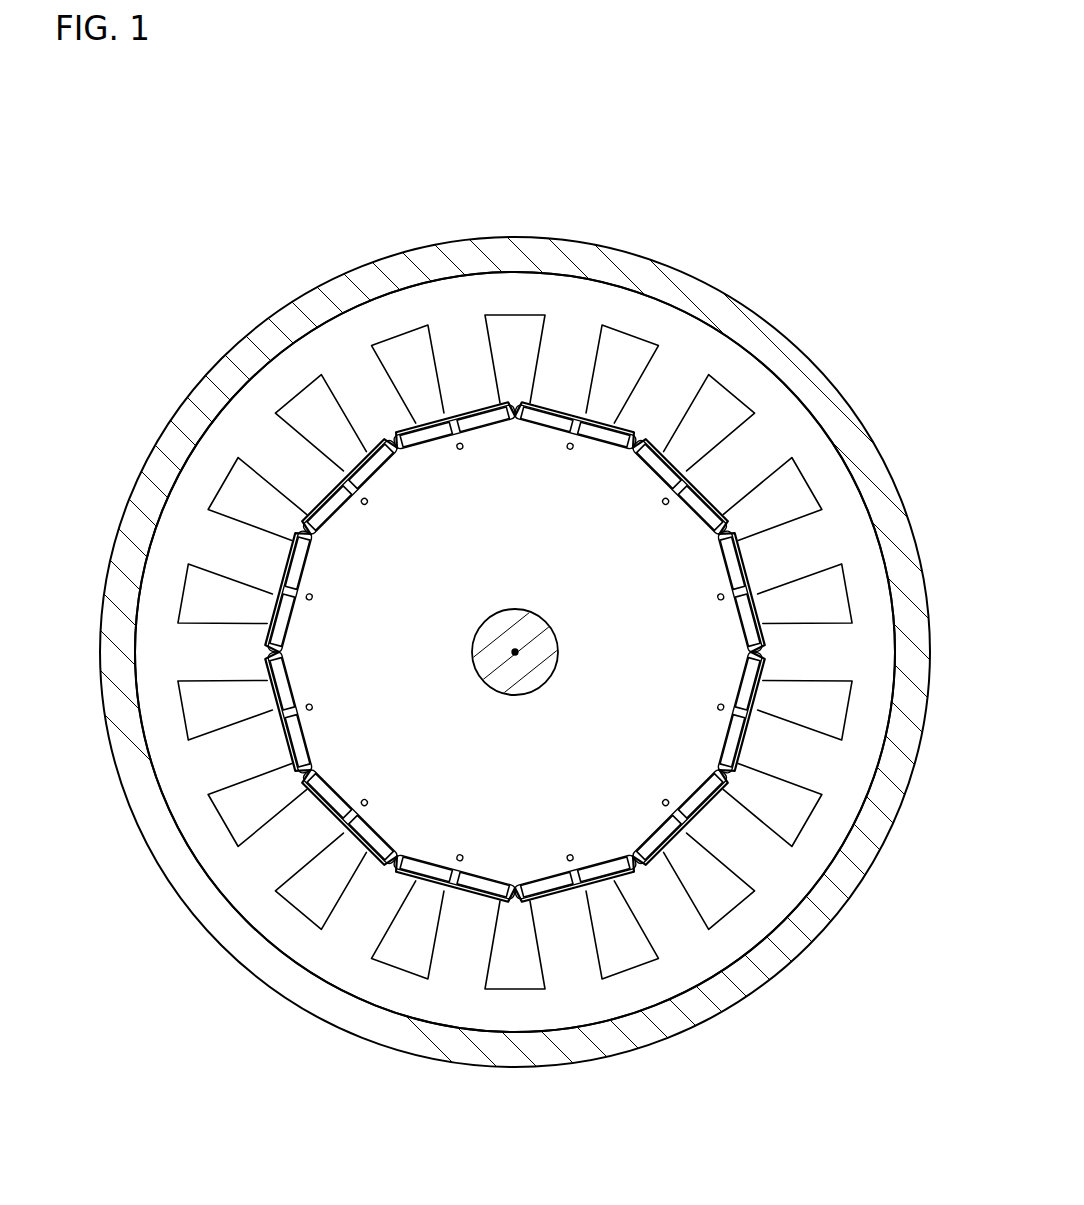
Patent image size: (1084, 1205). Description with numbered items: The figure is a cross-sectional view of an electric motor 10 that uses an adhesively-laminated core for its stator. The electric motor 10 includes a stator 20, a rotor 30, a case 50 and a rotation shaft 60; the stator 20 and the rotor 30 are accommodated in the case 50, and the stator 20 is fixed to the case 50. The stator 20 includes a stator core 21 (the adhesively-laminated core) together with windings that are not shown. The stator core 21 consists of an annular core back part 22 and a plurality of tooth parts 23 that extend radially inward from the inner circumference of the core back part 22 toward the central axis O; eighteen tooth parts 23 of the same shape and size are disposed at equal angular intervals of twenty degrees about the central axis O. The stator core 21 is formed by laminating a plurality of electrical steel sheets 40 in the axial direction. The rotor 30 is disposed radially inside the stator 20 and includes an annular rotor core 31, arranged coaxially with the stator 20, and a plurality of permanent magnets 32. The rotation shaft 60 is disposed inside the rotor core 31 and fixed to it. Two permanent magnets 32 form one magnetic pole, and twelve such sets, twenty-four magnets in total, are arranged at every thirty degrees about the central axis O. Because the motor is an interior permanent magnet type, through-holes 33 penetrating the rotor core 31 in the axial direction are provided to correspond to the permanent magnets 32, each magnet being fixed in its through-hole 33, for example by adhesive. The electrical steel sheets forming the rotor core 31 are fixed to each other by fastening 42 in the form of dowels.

The electric motor 10 is at (515, 602).
The stator 20 is at (500, 619).
The stator core 21 is at (500, 619).
The core back part 22 is at (712, 330).
The tooth parts 23 is at (658, 370).
The rotor 30 is at (514, 651).
The rotor core 31 is at (415, 836).
The permanent magnets 32 is at (597, 448).
The through-holes 33 is at (543, 872).
The electrical steel sheets 40 is at (297, 362).
The fastening 42 is at (369, 507).
The case 50 is at (857, 440).
The rotation shaft 60 is at (553, 665).
The central axis O is at (520, 650).